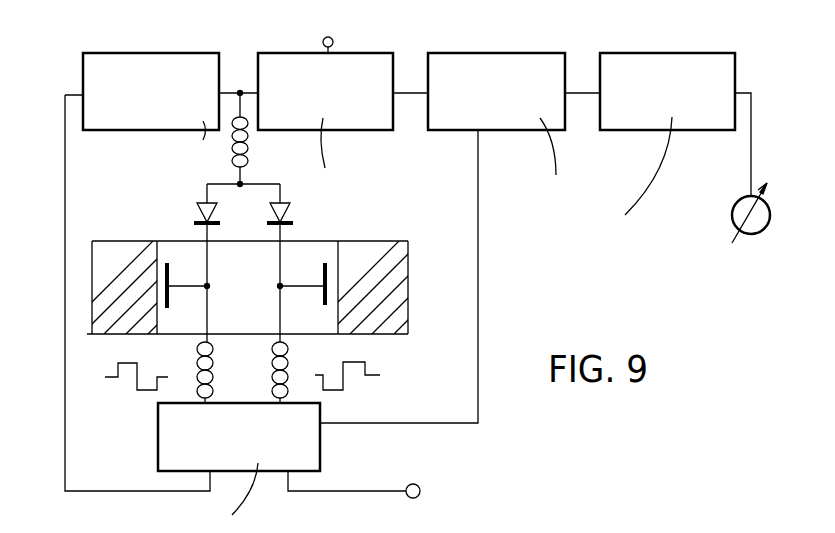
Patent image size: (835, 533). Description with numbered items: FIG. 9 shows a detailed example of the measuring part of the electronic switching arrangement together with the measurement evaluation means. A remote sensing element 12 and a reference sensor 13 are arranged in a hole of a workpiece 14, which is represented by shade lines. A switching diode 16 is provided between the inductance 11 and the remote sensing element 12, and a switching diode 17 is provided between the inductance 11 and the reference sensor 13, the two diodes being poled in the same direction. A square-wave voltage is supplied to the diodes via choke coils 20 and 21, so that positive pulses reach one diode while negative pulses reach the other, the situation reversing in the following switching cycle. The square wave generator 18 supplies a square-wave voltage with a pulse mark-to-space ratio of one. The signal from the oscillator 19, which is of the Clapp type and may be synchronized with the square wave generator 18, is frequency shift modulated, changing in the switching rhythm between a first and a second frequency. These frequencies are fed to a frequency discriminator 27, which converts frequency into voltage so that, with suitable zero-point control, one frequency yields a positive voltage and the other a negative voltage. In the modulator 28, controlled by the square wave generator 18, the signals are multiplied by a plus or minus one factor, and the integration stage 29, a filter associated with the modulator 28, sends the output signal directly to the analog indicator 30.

The oscillator 19 is at (88, 78).
The inductance 11 is at (246, 140).
The frequency discriminator 27 is at (385, 110).
The modulator 28 is at (500, 118).
The integration stage 29 is at (645, 118).
The analog indicator 30 is at (733, 208).
The switching diode 16 is at (196, 210).
The switching diode 17 is at (290, 213).
The remote sensing element 12 is at (170, 295).
The reference sensor 13 is at (318, 293).
The workpiece 14 is at (386, 327).
The choke coil 20 is at (216, 370).
The choke coil 21 is at (272, 372).
The square wave generator 18 is at (310, 448).